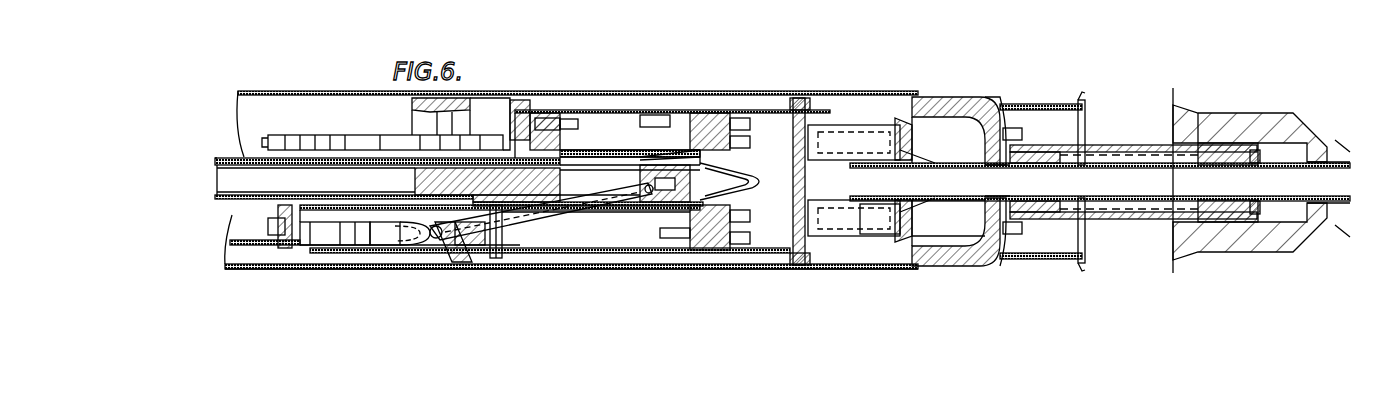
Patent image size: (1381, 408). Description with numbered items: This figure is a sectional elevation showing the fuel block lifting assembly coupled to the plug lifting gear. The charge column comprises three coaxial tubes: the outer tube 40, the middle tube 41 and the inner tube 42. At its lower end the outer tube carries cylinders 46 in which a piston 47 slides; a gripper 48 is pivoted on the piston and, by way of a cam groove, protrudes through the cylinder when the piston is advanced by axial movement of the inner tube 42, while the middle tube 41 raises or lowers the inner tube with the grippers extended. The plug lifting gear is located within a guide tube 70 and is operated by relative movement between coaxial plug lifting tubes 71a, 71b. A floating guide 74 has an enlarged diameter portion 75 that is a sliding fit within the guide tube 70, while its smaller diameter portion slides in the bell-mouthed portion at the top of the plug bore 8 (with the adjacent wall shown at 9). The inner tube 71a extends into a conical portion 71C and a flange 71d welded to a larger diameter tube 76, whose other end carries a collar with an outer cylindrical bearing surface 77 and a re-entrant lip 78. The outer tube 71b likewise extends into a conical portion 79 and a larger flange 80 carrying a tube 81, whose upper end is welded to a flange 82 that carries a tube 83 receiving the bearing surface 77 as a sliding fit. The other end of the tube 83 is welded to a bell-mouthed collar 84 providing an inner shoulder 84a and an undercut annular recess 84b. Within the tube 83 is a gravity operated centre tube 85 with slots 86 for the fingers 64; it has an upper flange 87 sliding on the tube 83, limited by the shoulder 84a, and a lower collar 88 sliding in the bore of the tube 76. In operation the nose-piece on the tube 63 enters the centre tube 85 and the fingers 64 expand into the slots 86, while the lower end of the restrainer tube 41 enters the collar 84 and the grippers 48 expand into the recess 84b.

The plug bore 8 is at (1268, 113).
The wall block 9 is at (1222, 113).
The outer tube 40 is at (338, 270).
The middle tube 41 is at (290, 246).
The inner tube 42 is at (270, 238).
The cylinder 46 is at (378, 250).
The piston 47 is at (398, 247).
The gripper 48 is at (455, 258).
The tube 63 is at (252, 200).
The fingers 64 is at (588, 214).
The guide tube 70 is at (978, 97).
The inner plug lifting tube 71a is at (1018, 197).
The outer plug lifting tube 71b is at (975, 196).
The conical portion 71C is at (848, 176).
The flange 71d is at (815, 212).
The floating guide 74 is at (1135, 145).
The enlarged diameter portion 75 is at (992, 100).
The tube 76 is at (805, 217).
The bearing surface 77 is at (710, 252).
The re-entrant lip 78 is at (688, 238).
The conical portion 79 is at (925, 204).
The flange 80 is at (915, 226).
The tube 81 is at (882, 240).
The flange 82 is at (815, 265).
The tube 83 is at (640, 95).
The bell-mouthed collar 84 is at (535, 252).
The inner shoulder 84a is at (504, 252).
The annular recess 84b is at (458, 245).
The gravity operated centre tube 85 is at (665, 152).
The slots 86 is at (648, 205).
The flange 87 is at (570, 140).
The collar 88 is at (725, 140).